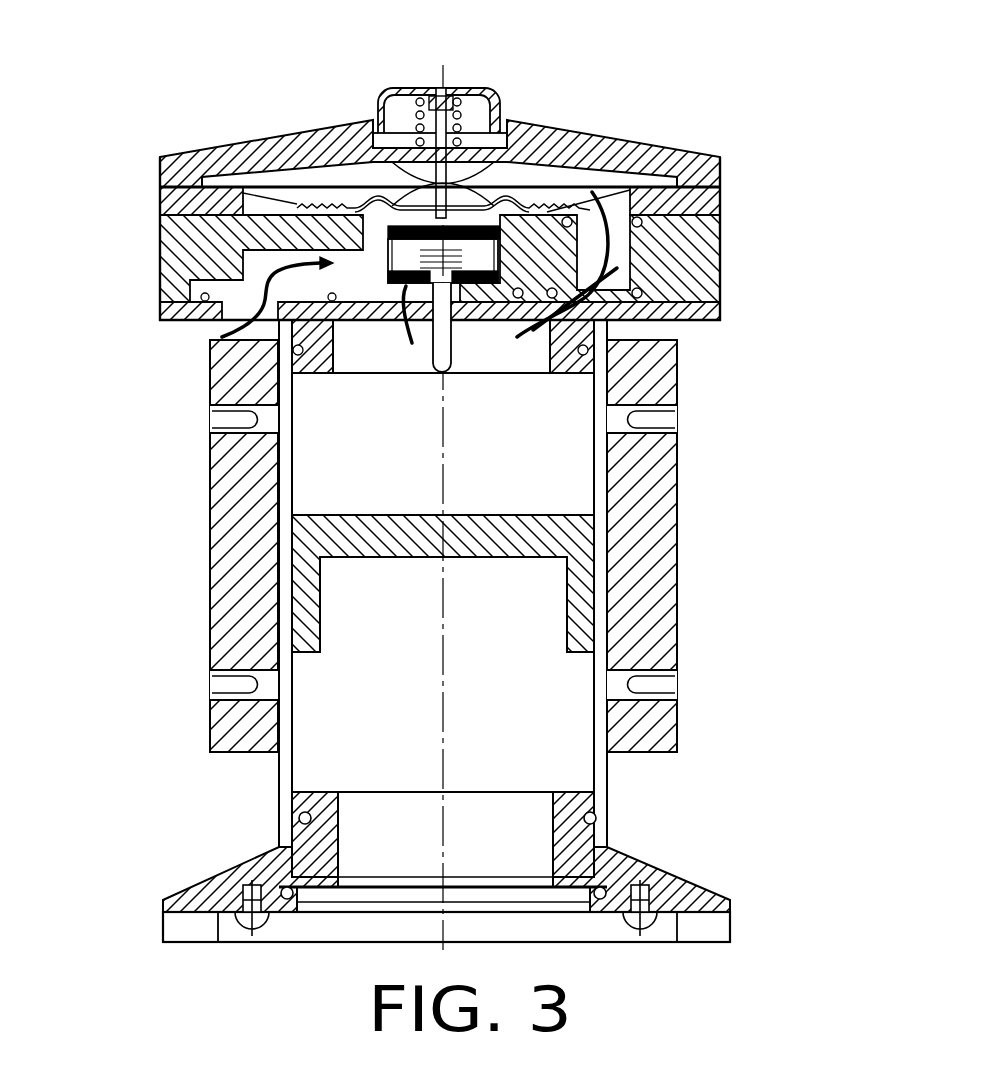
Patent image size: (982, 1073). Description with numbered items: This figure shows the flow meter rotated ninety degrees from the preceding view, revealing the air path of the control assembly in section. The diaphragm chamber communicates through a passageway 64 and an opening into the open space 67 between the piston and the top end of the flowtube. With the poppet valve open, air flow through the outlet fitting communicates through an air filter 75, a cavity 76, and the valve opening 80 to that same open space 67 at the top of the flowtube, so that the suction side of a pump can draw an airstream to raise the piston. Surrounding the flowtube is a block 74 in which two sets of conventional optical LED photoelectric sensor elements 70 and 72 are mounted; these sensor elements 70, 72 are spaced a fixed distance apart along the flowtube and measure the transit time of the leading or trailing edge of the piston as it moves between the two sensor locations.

The passageway 64 is at (590, 248).
The open space 67 is at (517, 357).
The photoelectric sensor element 70 is at (212, 418).
The photoelectric sensor element 72 is at (658, 687).
The block 74 is at (225, 545).
The air filter 75 is at (205, 270).
The cavity 76 is at (307, 200).
The valve opening 80 is at (507, 213).